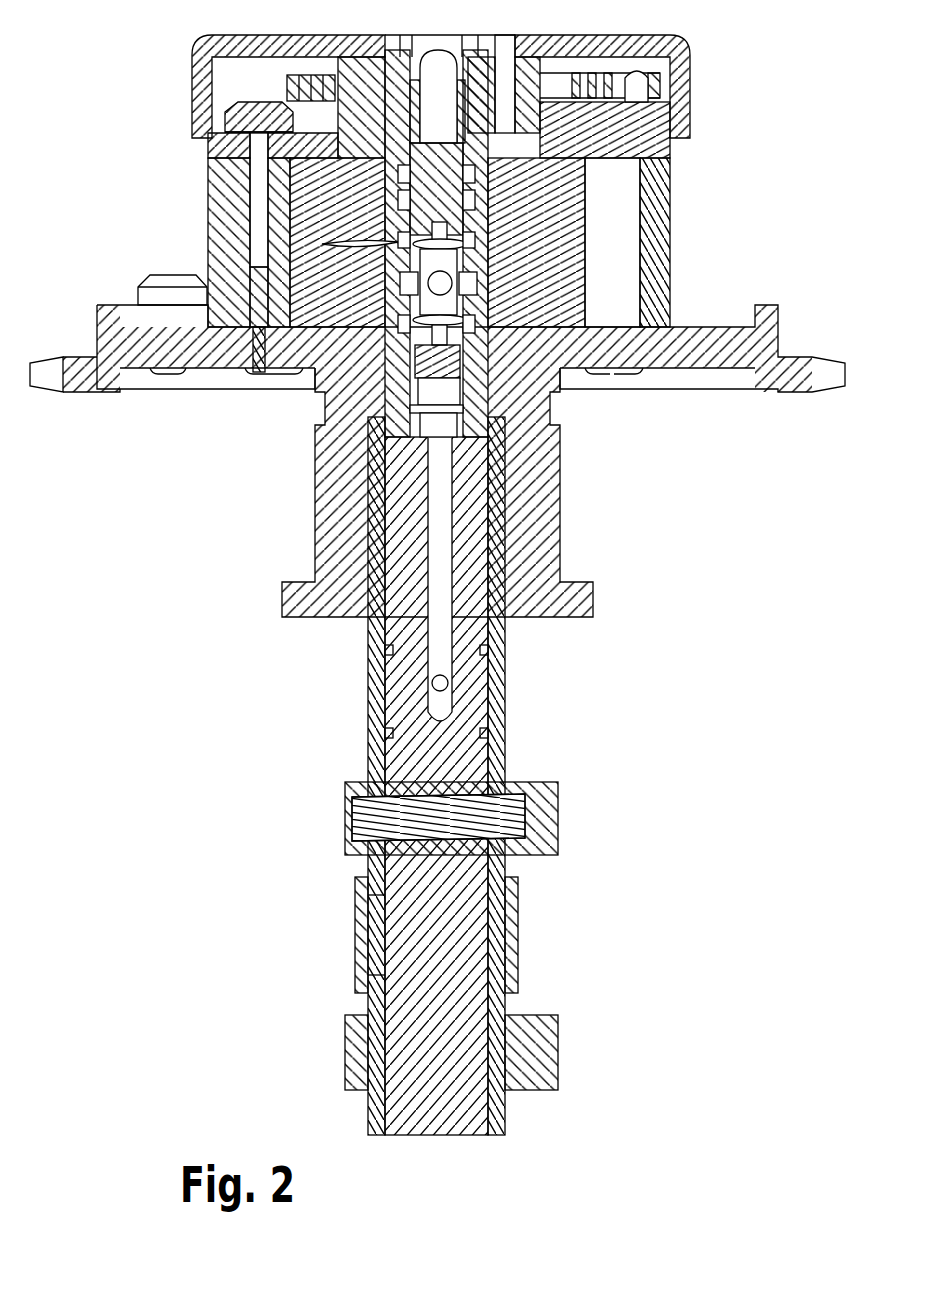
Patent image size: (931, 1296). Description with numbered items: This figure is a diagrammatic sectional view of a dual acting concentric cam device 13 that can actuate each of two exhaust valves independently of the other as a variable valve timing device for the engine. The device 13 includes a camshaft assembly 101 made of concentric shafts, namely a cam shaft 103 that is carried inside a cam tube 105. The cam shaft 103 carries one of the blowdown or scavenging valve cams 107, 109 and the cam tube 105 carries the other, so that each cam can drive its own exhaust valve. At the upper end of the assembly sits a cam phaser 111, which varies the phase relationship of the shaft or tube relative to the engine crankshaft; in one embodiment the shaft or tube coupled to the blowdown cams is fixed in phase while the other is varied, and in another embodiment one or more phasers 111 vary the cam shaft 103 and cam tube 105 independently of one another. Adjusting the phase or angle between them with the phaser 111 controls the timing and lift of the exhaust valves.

The dual acting concentric cam device 13 is at (100, 112).
The cam phaser 111 is at (190, 222).
The camshaft assembly 101 is at (290, 668).
The cam tube 105 is at (372, 748).
The cam shaft 103 is at (397, 905).
The valve cam 107 is at (545, 822).
The valve cam 109 is at (537, 1032).